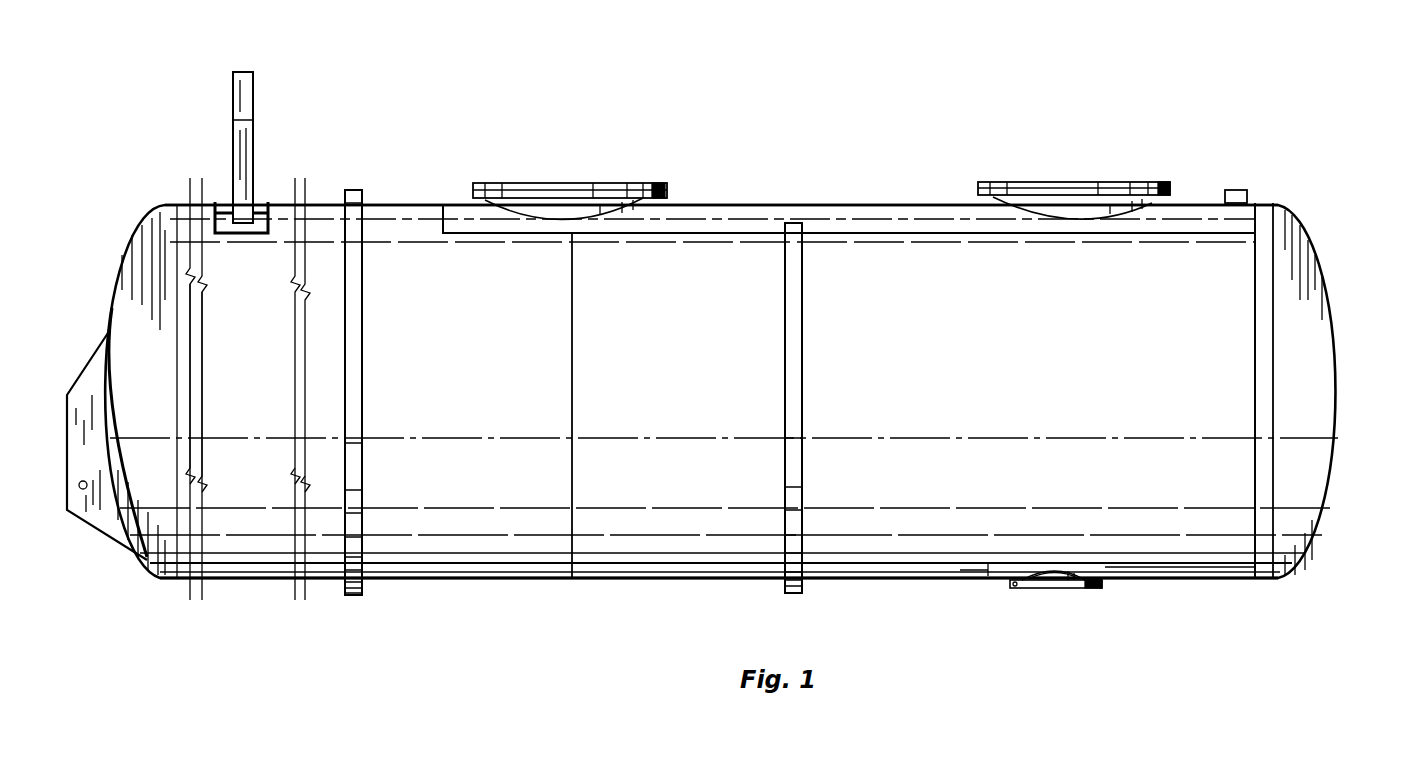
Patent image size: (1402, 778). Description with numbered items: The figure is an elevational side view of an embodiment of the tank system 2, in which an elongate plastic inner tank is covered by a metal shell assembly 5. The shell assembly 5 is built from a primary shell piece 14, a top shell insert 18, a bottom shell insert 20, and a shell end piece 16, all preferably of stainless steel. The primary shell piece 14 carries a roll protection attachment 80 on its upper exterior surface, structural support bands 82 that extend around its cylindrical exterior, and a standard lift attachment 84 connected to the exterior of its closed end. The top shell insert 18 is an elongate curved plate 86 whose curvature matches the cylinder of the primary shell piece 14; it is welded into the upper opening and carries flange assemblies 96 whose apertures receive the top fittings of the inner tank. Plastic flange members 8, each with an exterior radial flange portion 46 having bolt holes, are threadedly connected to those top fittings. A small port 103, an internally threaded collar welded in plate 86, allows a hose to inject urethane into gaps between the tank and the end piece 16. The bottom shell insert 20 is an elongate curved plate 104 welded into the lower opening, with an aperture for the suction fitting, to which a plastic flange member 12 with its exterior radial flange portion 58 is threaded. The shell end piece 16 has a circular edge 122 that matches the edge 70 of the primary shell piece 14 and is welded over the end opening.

The tank system 2 is at (955, 163).
The metal shell assembly 5 is at (672, 497).
The plastic flange member 8 is at (856, 206).
The exterior radial flange portion 46 is at (856, 206).
The plastic flange member 12 is at (1022, 603).
The exterior radial flange portion 58 is at (1012, 587).
The primary shell piece 14 is at (413, 228).
The shell end piece 16 is at (1312, 332).
The top shell insert 18 is at (865, 212).
The bottom shell insert 20 is at (1163, 568).
The edge 70 is at (1257, 268).
The roll protection attachment 80 is at (232, 152).
The structural support bands 82 is at (355, 392).
The standard lift attachment 84 is at (112, 523).
The elongate curved plate 86 is at (748, 212).
The flange assemblies 96 is at (573, 208).
The small port 103 is at (1248, 195).
The elongate curved plate 104 is at (1137, 572).
The circular edge 122 is at (1253, 370).